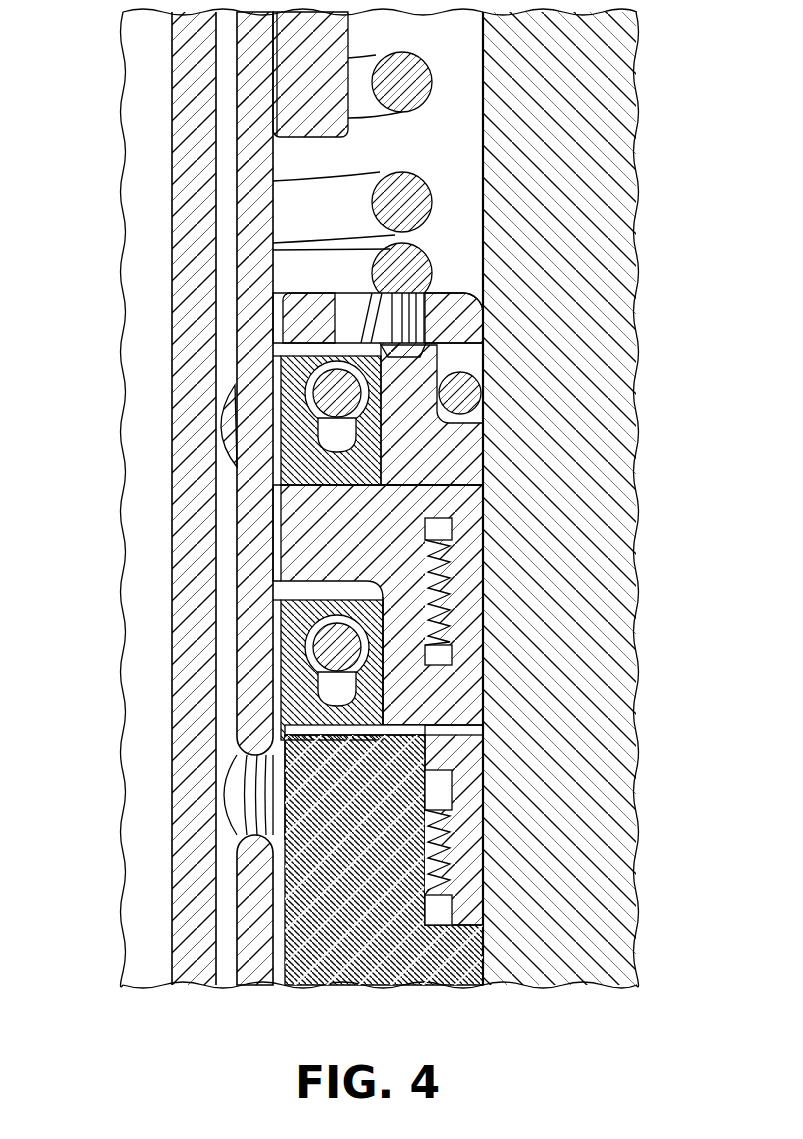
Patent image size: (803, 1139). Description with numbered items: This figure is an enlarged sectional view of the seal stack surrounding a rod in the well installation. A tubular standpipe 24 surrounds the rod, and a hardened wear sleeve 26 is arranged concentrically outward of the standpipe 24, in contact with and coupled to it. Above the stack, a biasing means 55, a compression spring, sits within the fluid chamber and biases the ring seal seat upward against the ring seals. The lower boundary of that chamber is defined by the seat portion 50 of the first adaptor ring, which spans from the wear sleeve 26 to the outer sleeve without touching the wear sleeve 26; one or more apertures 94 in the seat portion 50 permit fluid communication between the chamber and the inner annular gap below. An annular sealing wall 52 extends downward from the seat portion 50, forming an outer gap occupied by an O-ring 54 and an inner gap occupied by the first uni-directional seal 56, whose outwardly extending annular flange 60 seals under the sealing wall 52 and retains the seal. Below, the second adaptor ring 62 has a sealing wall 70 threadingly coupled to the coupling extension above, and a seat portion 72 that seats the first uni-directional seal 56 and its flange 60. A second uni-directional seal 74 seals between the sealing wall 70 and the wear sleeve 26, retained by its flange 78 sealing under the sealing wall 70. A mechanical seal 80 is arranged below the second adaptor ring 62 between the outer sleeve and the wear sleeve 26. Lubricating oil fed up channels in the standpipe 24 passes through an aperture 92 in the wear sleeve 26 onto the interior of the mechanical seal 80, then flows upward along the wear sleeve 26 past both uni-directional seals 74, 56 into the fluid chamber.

The tubular standpipe 24 is at (200, 330).
The hardened wear sleeve 26 is at (248, 522).
The first uni-directional seal 56 is at (238, 462).
The aperture 94 is at (355, 308).
The aperture 92 is at (236, 797).
The biasing means 55 is at (412, 84).
The seat portion 50 is at (455, 323).
The O-ring 54 is at (465, 392).
The annular sealing wall 52 is at (420, 424).
The annular flange 60 is at (395, 478).
The second adaptor ring 62 is at (397, 506).
The seat portion 72 is at (320, 540).
The sealing wall 70 is at (398, 625).
The second uni-directional seal 74 is at (372, 688).
The flange 78 is at (410, 731).
The mechanical seal 80 is at (380, 845).